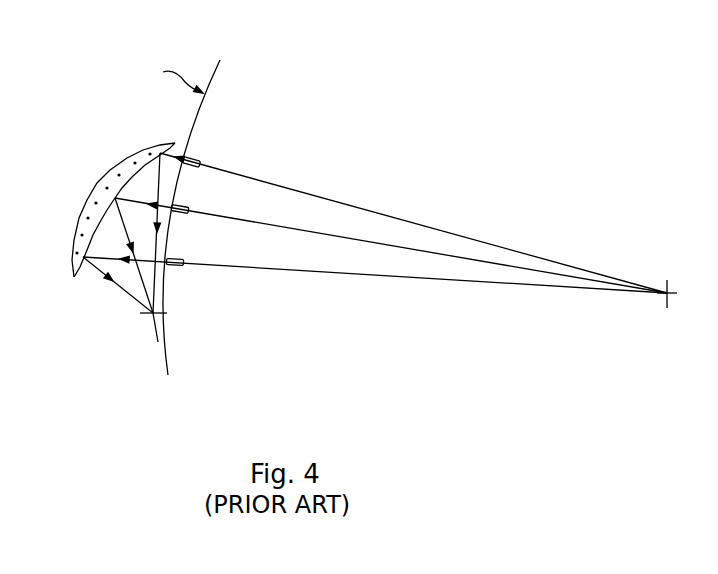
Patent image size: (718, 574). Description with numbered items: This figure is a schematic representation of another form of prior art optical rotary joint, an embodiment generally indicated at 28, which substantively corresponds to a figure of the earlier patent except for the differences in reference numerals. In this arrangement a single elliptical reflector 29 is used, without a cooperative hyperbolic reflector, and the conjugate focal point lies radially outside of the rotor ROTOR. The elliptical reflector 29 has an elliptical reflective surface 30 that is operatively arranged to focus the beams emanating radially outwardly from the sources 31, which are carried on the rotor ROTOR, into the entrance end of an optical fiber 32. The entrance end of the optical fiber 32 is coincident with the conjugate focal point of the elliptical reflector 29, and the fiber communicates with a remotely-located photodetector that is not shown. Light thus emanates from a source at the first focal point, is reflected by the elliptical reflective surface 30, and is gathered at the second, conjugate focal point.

The embodiment of prior art optical rotary joint 28 is at (427, 142).
The elliptical reflector 29 is at (103, 172).
The elliptical reflective surface 30 is at (86, 264).
The sources 31 is at (200, 163).
The optical fiber 32 is at (155, 338).
The rotor ROTOR is at (145, 217).